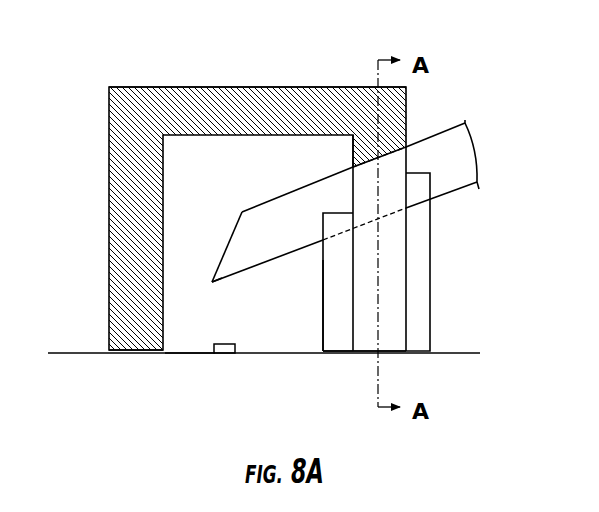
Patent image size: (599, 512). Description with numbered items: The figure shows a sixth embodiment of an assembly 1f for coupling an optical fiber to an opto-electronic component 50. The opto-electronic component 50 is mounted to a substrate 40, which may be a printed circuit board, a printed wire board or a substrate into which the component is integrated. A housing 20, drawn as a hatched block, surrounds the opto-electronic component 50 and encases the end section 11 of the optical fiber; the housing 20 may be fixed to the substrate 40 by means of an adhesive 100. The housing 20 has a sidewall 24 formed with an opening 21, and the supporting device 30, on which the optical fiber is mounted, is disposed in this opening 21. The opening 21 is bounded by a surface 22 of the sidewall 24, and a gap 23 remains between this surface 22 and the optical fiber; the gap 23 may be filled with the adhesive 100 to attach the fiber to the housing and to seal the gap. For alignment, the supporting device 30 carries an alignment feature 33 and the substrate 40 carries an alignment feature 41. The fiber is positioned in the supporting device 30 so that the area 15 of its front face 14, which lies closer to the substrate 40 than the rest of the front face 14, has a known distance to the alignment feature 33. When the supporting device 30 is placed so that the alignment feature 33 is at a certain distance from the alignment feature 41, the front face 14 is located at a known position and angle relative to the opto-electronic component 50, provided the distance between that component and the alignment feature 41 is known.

The assembly 1f is at (316, 74).
The end section of the optical fiber 11 is at (350, 184).
The front face of the optical fiber 14 is at (228, 243).
The area of the front face 15 is at (212, 282).
The housing 20 is at (228, 90).
The opening 21 is at (393, 181).
The surface of the sidewall 22 is at (365, 150).
The gap 23 is at (406, 146).
The sidewall 24 is at (392, 242).
The supporting device 30 is at (417, 322).
The alignment feature of the supporting device 33 is at (322, 328).
The substrate 40 is at (195, 354).
The alignment feature of the substrate 41 is at (72, 346).
The opto-electronic component 50 is at (225, 344).
The adhesive 100 is at (120, 354).